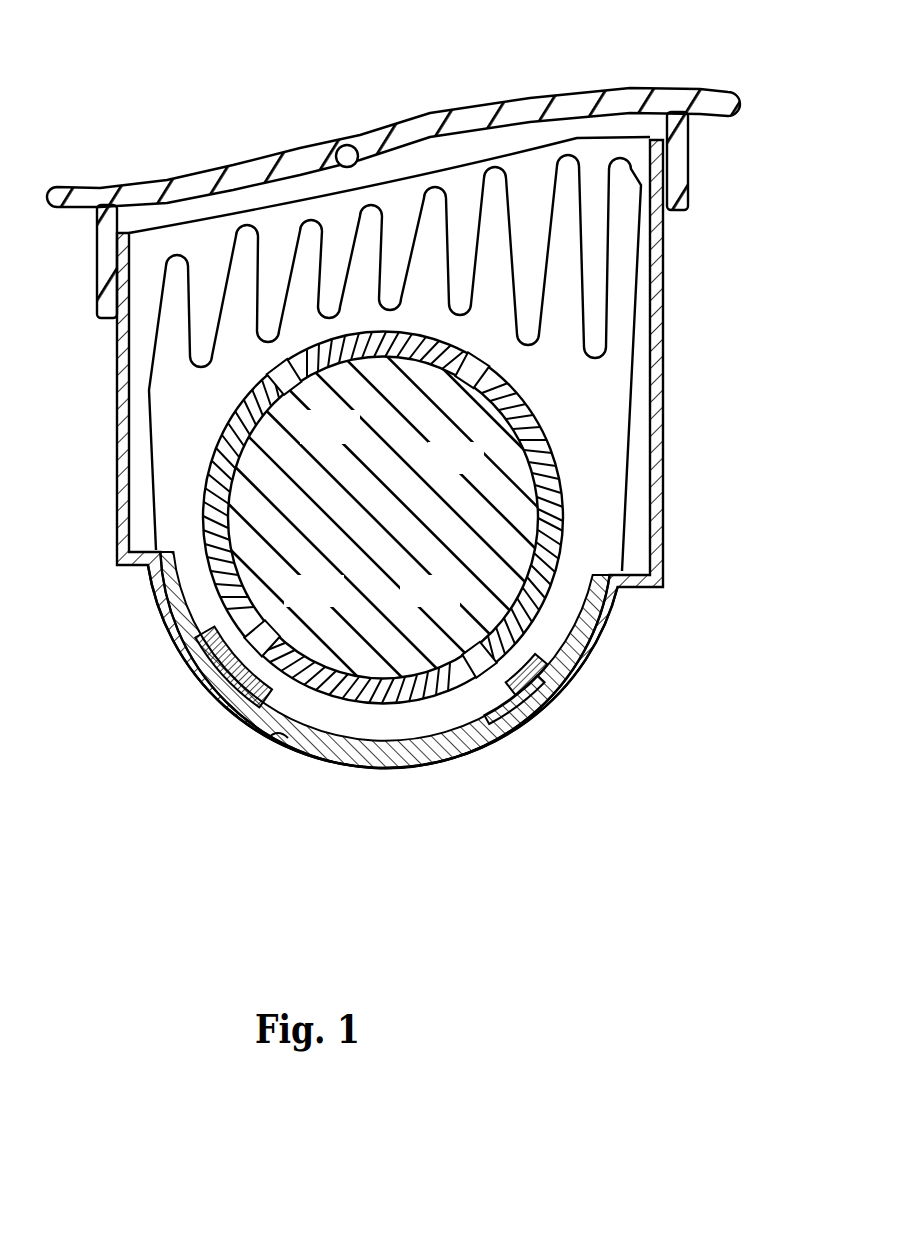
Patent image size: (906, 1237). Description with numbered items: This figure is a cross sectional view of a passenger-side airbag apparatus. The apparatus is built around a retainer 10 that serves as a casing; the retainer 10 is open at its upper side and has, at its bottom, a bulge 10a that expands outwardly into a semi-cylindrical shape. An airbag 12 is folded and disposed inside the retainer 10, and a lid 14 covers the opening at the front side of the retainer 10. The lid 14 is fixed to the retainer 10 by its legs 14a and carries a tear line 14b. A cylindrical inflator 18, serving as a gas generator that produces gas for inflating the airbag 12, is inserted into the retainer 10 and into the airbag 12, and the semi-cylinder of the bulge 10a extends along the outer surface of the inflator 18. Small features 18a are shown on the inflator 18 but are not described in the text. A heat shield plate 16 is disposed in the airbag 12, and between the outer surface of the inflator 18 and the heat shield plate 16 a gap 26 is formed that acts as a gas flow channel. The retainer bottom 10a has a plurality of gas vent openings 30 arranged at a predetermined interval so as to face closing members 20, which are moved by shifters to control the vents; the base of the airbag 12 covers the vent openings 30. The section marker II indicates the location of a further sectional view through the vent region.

The retainer 10 is at (663, 432).
The bulge 10a is at (322, 765).
The airbag 12 is at (640, 290).
The lid 14 is at (487, 95).
The legs 14a is at (690, 178).
The tear line 14b is at (333, 143).
The heat shield plate 16 is at (372, 745).
The cylindrical inflator 18 is at (505, 538).
The clip of cylindrical member 18a is at (290, 392).
The closing members 20 is at (207, 627).
The gap (gas flow channel) 26 is at (273, 740).
The gas vent openings 30 is at (522, 720).
The section line II is at (578, 722).